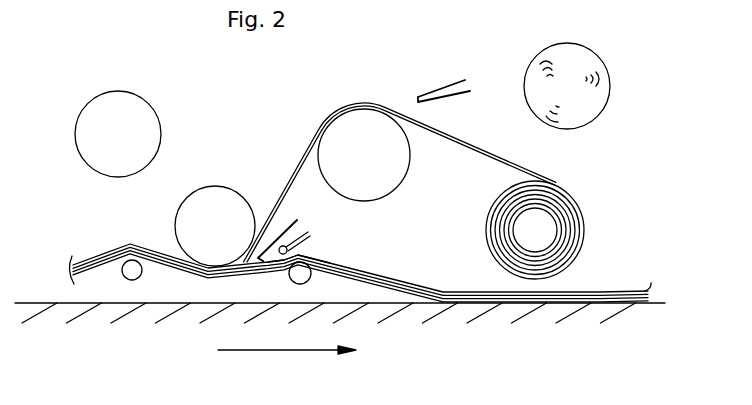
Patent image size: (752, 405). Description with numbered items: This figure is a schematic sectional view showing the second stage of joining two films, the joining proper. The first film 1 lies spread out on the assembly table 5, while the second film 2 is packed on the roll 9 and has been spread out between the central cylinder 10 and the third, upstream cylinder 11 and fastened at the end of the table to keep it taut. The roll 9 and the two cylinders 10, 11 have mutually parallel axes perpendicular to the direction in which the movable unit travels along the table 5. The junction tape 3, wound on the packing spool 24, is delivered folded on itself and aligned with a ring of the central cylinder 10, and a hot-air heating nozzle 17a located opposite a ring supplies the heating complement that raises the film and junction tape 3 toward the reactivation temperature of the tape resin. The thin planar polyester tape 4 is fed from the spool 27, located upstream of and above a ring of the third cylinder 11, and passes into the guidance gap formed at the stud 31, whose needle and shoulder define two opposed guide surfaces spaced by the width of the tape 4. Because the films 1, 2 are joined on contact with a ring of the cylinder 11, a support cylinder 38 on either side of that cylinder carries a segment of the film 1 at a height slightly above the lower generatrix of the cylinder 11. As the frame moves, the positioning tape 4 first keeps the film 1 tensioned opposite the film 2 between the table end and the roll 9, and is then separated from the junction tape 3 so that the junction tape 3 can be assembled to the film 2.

The film 1 is at (110, 263).
The film 2 is at (468, 153).
The junction tape 3 is at (273, 265).
The planar polyester tape 4 is at (307, 243).
The assembly table 5 is at (388, 307).
The roll 9 is at (557, 226).
The central cylinder 10 is at (382, 139).
The third cylinder 11 is at (215, 207).
The heating nozzle 17a is at (283, 222).
The packing spool 24 is at (585, 68).
The spool 27 is at (140, 108).
The stud 31 is at (293, 249).
The support cylinder 38 is at (138, 278).